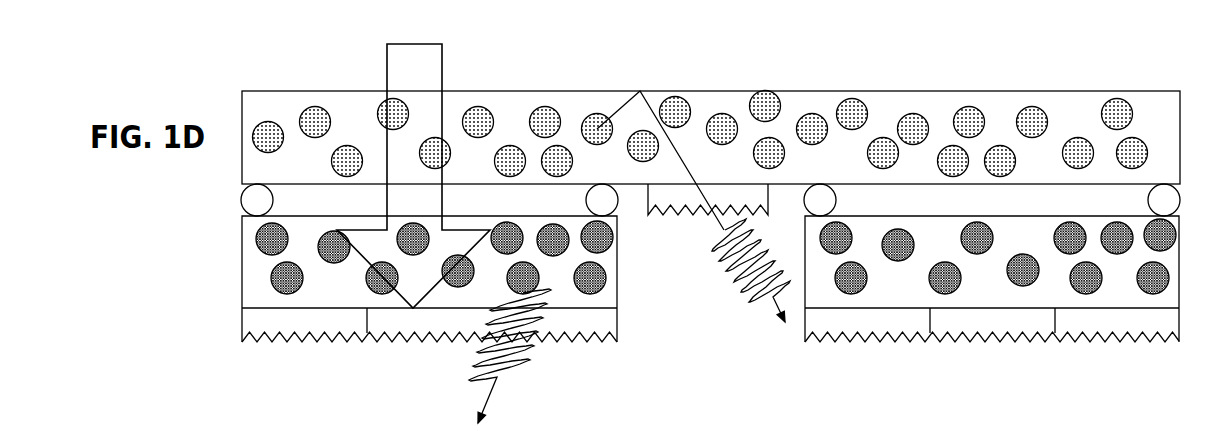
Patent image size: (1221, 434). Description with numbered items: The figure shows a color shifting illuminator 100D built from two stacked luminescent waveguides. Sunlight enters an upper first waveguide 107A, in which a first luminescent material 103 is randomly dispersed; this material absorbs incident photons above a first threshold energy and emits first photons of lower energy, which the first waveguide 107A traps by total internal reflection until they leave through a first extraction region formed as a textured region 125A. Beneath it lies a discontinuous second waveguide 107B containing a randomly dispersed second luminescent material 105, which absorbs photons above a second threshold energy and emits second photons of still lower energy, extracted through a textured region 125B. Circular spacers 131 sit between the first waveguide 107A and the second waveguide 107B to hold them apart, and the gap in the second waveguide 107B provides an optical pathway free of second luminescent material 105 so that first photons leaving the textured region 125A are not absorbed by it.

The color shifting illuminator 100D is at (283, 68).
The first luminescent material 103 is at (1030, 113).
The second luminescent material 105 is at (945, 283).
The first waveguide 107A is at (938, 110).
The second waveguide 107B is at (335, 283).
The textured region 125A is at (693, 201).
The textured region 125B is at (1070, 317).
The spacer 131 is at (257, 200).